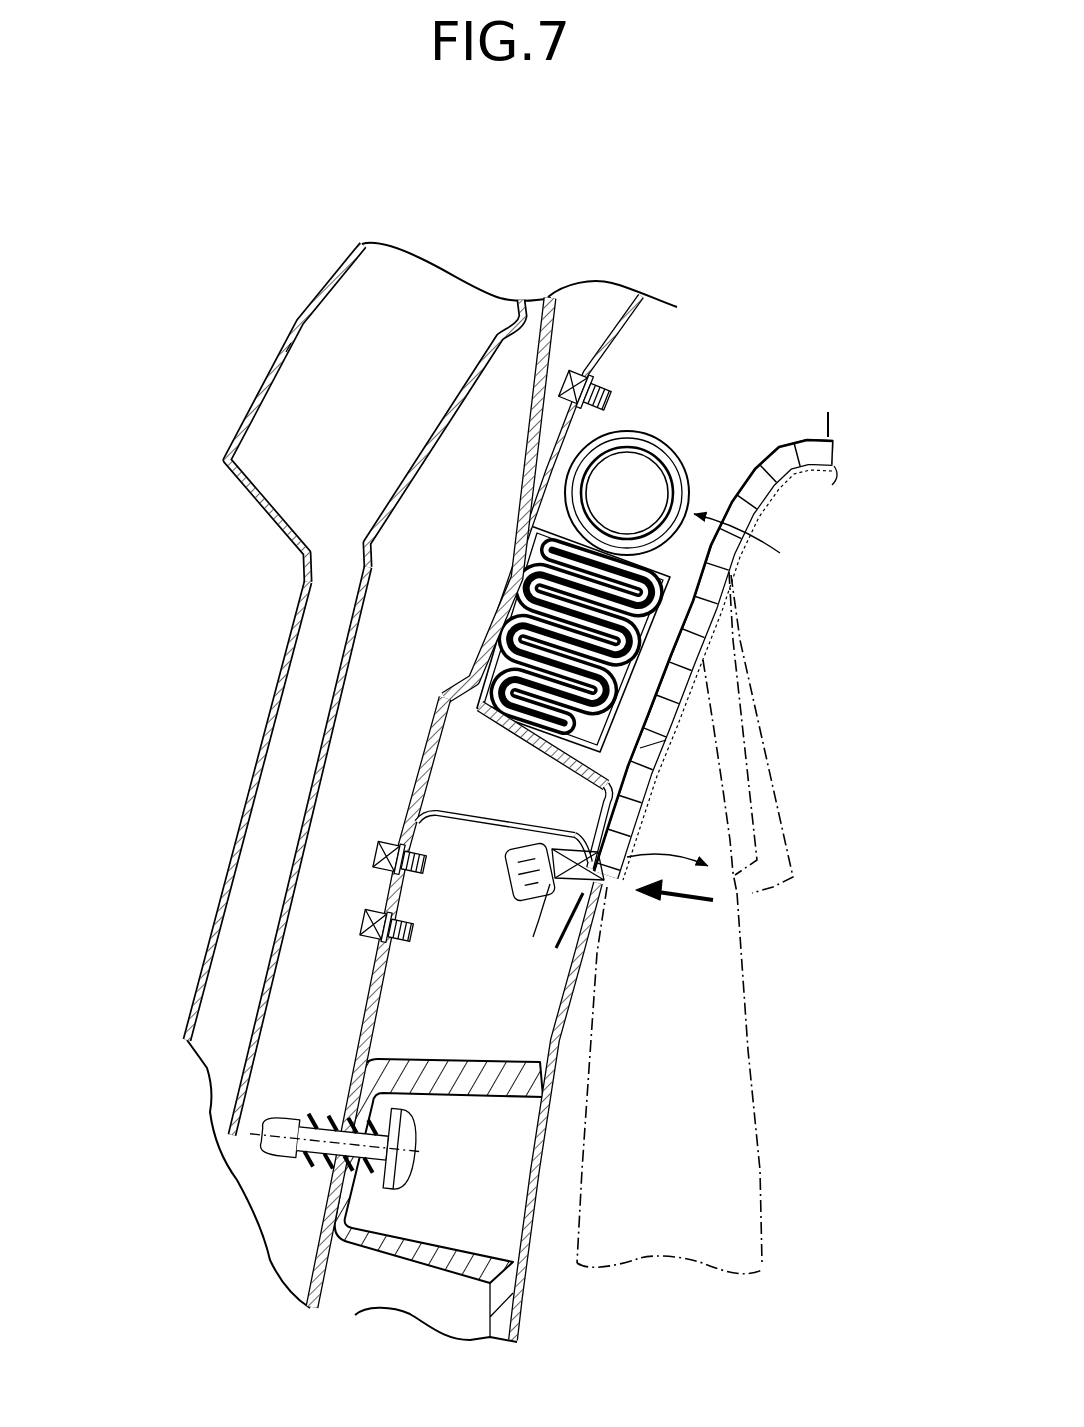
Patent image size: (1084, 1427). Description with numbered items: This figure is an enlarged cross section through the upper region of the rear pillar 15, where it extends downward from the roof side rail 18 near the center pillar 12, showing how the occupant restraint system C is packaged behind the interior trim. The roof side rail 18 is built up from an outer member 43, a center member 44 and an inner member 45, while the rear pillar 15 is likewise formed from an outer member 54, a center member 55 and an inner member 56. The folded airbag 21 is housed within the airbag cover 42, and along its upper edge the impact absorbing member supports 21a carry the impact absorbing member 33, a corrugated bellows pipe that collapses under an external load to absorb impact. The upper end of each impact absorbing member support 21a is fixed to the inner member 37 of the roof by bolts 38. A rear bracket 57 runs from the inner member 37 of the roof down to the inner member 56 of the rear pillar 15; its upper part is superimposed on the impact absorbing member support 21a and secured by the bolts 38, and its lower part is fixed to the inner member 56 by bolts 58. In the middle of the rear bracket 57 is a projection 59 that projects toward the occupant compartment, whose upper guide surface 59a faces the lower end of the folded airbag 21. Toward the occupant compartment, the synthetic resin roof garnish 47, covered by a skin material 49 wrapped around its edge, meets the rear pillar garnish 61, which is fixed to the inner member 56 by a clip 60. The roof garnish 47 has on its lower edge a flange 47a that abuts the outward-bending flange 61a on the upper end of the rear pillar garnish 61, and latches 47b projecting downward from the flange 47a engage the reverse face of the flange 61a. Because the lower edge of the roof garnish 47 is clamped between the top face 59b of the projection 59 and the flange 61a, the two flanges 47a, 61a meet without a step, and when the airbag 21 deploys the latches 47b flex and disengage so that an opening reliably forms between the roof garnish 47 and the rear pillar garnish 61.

The center pillar 12 is at (706, 903).
The rear pillar 15 is at (245, 851).
The roof side rail 18 is at (389, 364).
The airbag 21 is at (640, 583).
The impact absorbing member support 21a is at (685, 455).
The impact absorbing member 33 is at (593, 462).
The inner member 37 is at (617, 320).
The bolt 38 is at (608, 390).
The airbag cover 42 is at (597, 777).
The outer member 43 is at (291, 343).
The center member 44 is at (452, 402).
The inner member 45 is at (540, 418).
The roof garnish 47 is at (656, 686).
The flange 47a is at (602, 884).
The latch 47b is at (520, 866).
The skin material 49 is at (637, 746).
The outer member 54 is at (207, 950).
The center member 55 is at (262, 1026).
The inner member 56 is at (361, 1038).
The rear bracket 57 is at (588, 436).
The bolt 58 is at (425, 868).
The projection 59 is at (535, 787).
The guide surface 59a is at (553, 753).
The top face 59b is at (626, 832).
The clip 60 is at (447, 1168).
The rear pillar garnish 61 is at (503, 1111).
The flange 61a is at (552, 908).
The occupant restraint system C is at (750, 544).